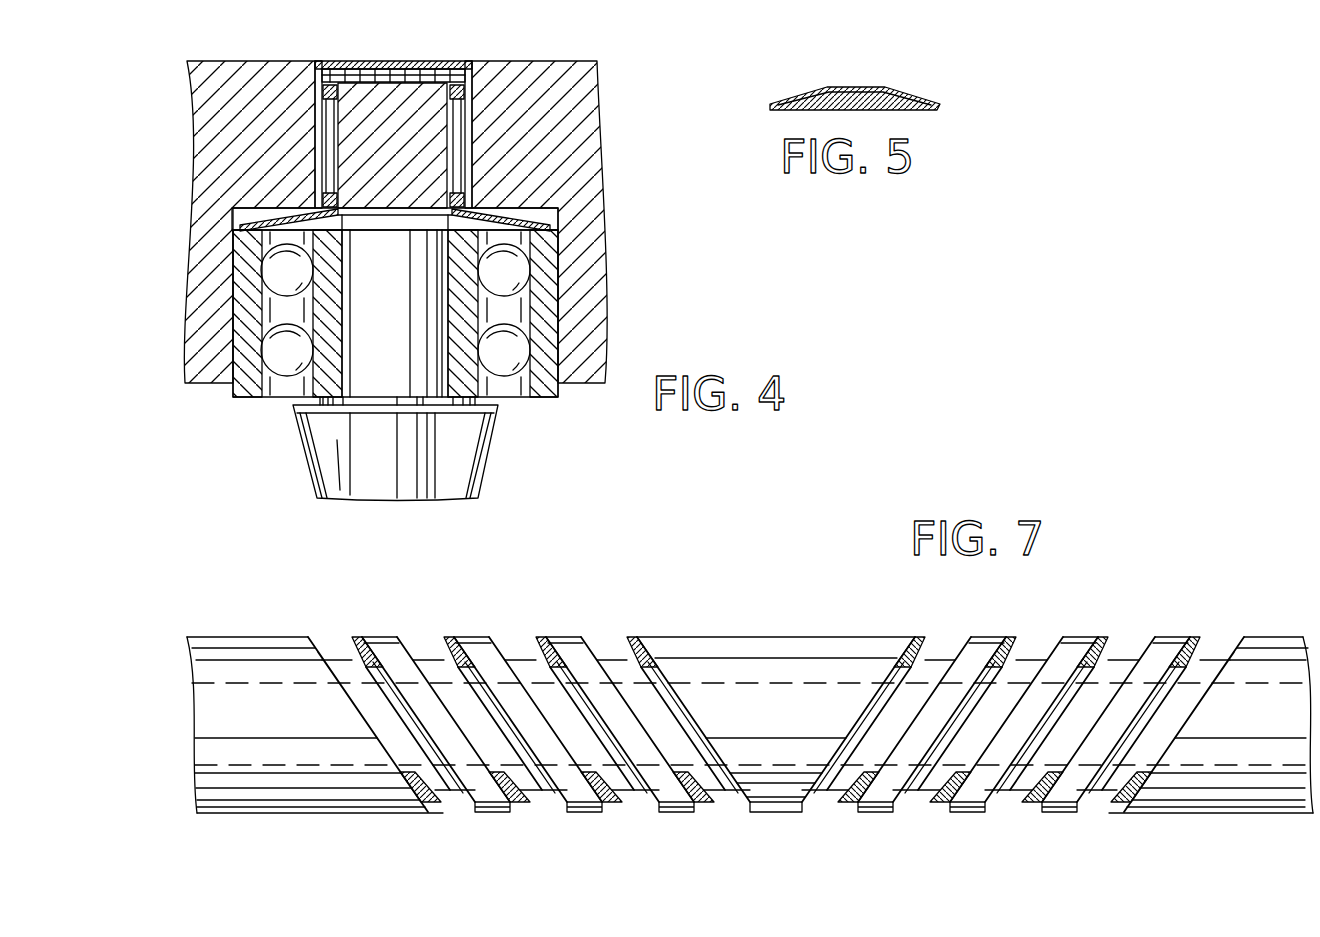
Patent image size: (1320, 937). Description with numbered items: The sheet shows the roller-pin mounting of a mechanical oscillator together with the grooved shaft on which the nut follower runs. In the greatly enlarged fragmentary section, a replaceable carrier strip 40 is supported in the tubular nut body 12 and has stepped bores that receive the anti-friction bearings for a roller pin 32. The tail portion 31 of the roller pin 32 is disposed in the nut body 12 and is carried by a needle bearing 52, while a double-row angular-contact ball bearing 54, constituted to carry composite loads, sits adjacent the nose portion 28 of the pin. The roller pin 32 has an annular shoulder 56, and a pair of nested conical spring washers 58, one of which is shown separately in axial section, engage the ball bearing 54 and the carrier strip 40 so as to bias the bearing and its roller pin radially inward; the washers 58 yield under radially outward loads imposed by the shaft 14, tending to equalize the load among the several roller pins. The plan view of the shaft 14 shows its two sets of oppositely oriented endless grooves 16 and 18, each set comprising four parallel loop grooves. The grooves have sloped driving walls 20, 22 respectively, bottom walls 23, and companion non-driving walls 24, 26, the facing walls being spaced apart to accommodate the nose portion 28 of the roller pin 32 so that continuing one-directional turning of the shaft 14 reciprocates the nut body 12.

In FIG. 4, the tubular nut body 12 is at (547, 78).
In FIG. 4, the carrier strip 40 is at (200, 162).
In FIG. 4, the tail portion 31 is at (358, 97).
In FIG. 4, the needle bearing 52 is at (422, 60).
In FIG. 4, the spring washer 58 is at (608, 135).
In FIG. 5, the spring washer 58 is at (912, 93).
In FIG. 4, the annular shoulder 56 is at (373, 226).
In FIG. 4, the roller pin 32 is at (360, 357).
In FIG. 4, the double-row angular-contact ball bearing 54 is at (532, 415).
In FIG. 4, the nose portion 28 is at (322, 472).
In FIG. 7, the shaft 14 is at (233, 650).
In FIG. 7, the endless groove 16 is at (467, 800).
In FIG. 7, the endless groove 18 is at (818, 795).
In FIG. 7, the driving wall 20 is at (415, 793).
In FIG. 7, the driving wall 22 is at (837, 807).
In FIG. 7, the bottom wall 23 is at (520, 663).
In FIG. 7, the non-driving wall 24 is at (375, 667).
In FIG. 7, the non-driving wall 26 is at (908, 668).